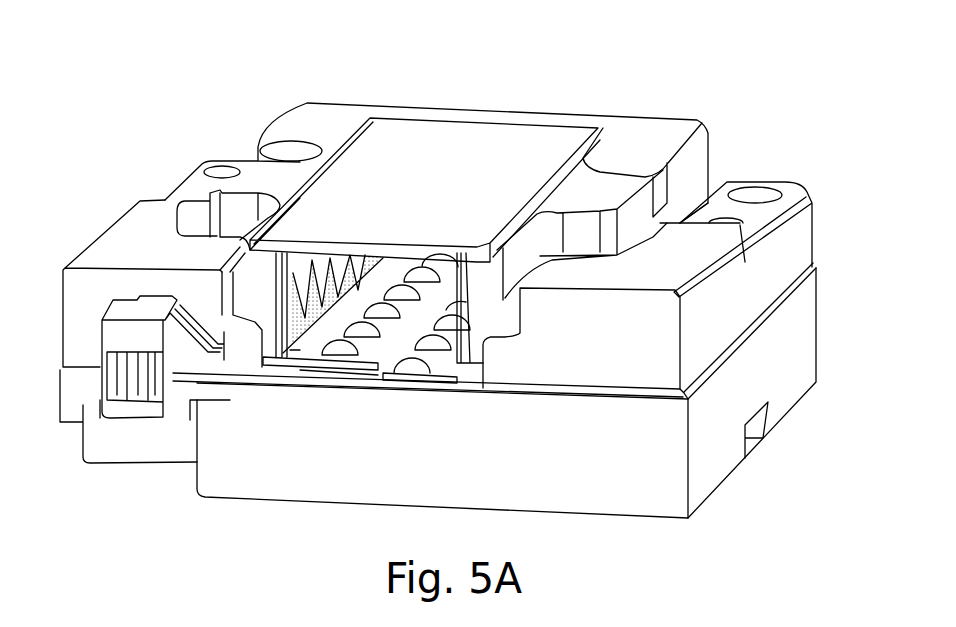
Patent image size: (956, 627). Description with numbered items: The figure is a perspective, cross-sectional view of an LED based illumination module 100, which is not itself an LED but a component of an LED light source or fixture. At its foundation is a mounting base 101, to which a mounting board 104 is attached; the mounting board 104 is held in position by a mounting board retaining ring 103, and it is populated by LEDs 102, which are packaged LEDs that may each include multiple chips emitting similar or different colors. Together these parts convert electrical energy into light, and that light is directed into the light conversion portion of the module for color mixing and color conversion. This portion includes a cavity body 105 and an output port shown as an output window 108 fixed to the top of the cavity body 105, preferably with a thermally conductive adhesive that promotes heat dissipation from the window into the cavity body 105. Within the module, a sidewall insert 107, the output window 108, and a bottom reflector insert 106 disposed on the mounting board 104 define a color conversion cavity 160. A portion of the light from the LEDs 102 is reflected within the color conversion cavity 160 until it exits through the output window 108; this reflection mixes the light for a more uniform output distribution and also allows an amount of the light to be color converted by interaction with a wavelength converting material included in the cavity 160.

The LED based illumination module 100 is at (166, 109).
The mounting base 101 is at (578, 505).
The LEDs 102 is at (447, 339).
The mounting board retaining ring 103 is at (810, 235).
The mounting board 104 is at (470, 383).
The cavity body 105 is at (662, 127).
The bottom reflector insert 106 is at (447, 362).
The sidewall insert 107 is at (300, 347).
The output window 108 is at (452, 181).
The color conversion cavity 160 is at (380, 355).